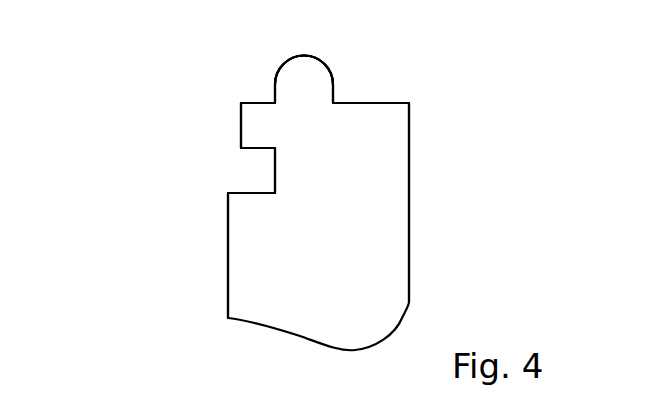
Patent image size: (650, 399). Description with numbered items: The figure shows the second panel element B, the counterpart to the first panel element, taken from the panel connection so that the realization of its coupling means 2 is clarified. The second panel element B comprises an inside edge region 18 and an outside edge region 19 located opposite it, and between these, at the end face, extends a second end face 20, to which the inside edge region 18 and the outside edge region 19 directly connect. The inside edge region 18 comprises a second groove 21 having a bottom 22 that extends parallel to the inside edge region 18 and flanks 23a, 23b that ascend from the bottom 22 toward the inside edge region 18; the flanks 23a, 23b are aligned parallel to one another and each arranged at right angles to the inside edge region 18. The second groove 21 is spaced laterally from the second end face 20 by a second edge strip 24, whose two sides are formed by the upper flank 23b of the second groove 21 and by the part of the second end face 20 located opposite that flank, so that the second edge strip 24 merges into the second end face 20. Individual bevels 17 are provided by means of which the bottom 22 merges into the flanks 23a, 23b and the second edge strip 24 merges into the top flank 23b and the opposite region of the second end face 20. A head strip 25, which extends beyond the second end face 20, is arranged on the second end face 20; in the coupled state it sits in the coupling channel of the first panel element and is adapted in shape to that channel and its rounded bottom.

The coupling means 2 is at (410, 67).
The bevels 17 is at (241, 103).
The inside edge region 18 is at (63, 170).
The outside edge region 19 is at (428, 162).
The second end face 20 is at (343, 54).
The second groove 21 is at (238, 180).
The bottom 22 is at (277, 170).
The flank 23a is at (249, 194).
The flank 23b is at (254, 148).
The second edge strip 24 is at (243, 128).
The head strip 25 is at (310, 78).
The second panel element B is at (366, 259).